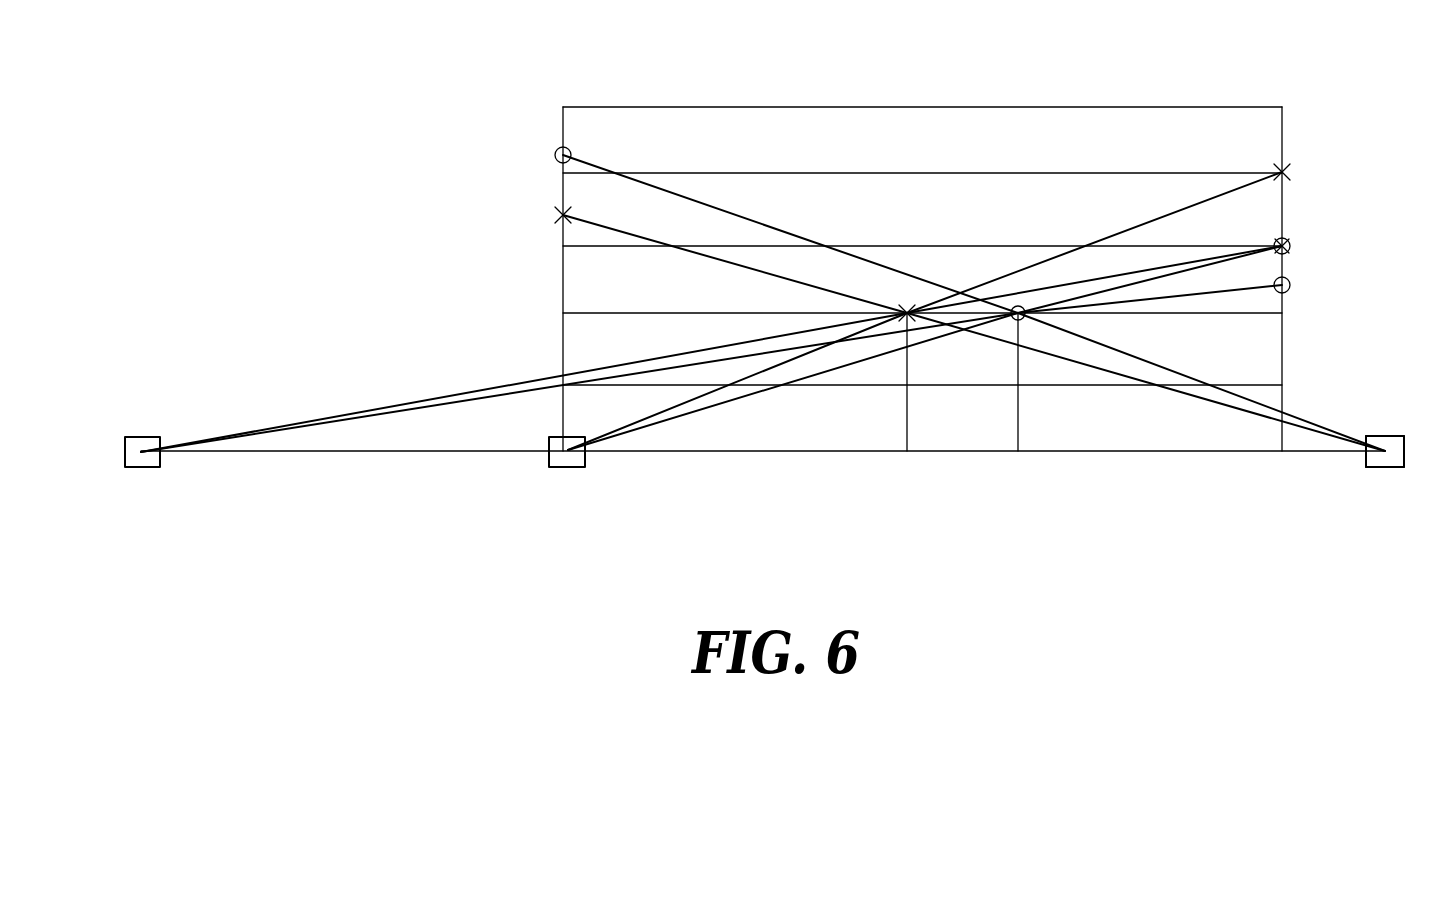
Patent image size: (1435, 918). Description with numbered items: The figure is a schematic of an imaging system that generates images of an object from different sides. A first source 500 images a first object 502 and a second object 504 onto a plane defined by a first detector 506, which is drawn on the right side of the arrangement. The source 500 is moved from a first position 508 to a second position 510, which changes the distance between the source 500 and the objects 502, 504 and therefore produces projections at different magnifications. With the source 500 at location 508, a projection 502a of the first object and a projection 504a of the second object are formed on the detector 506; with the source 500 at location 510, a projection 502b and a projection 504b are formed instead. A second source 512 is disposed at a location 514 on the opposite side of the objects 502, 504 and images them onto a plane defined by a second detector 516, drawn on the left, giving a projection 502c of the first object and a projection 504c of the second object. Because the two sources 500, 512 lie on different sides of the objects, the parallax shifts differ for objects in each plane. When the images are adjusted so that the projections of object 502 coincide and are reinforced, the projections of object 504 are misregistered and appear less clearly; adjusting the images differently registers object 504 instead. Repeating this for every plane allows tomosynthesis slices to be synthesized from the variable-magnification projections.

The first source 500 is at (742, 466).
The first object 502 is at (903, 413).
The second object 504 is at (1016, 413).
The projection of the first object 502a is at (1282, 258).
The projection of the first object 502b is at (1292, 173).
The projection of the first object 502c is at (554, 214).
The projection of the second object 504a is at (1292, 285).
The projection of the second object 504b is at (1292, 247).
The projection of the second object 504c is at (554, 155).
The first detector 506 is at (1281, 101).
The first source position 508 is at (142, 474).
The second source position 510 is at (565, 485).
The second source 512 is at (1383, 435).
The second source location 514 is at (1389, 489).
The second detector 516 is at (561, 101).